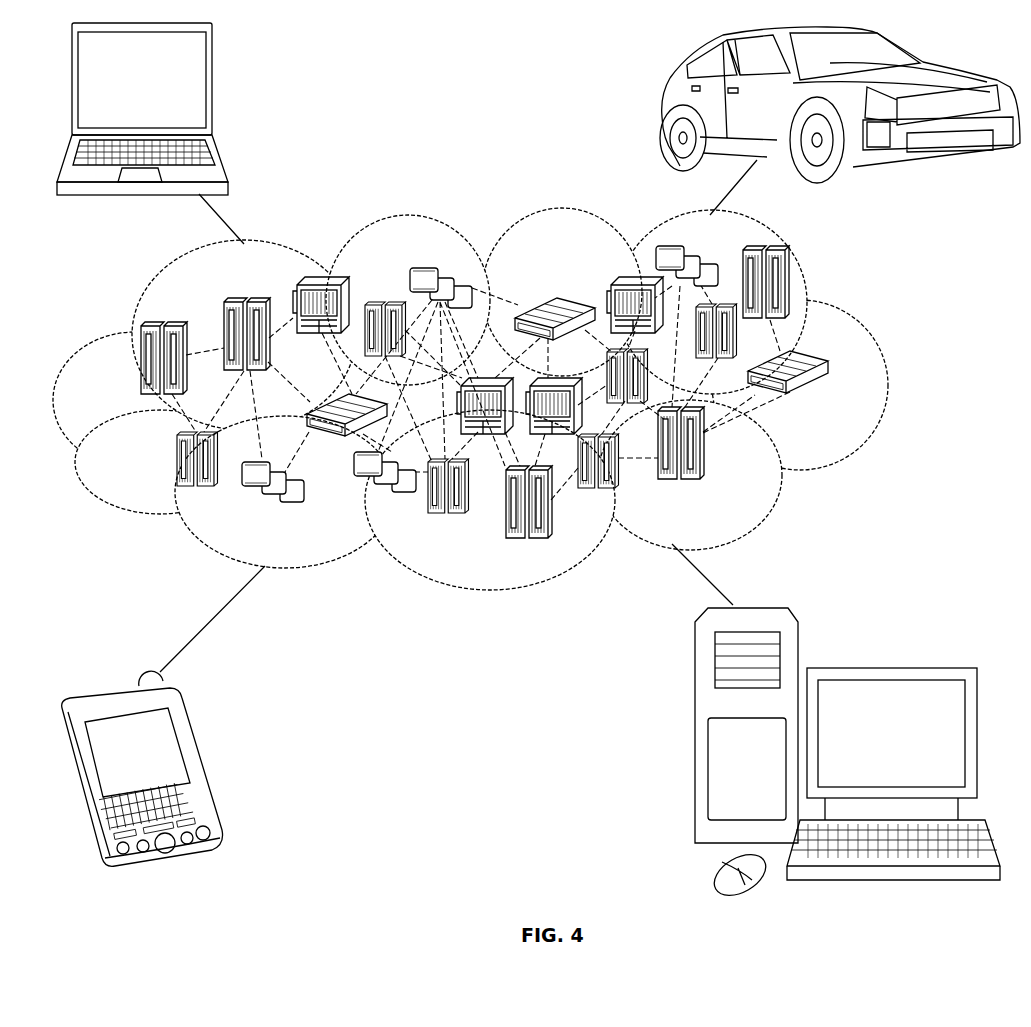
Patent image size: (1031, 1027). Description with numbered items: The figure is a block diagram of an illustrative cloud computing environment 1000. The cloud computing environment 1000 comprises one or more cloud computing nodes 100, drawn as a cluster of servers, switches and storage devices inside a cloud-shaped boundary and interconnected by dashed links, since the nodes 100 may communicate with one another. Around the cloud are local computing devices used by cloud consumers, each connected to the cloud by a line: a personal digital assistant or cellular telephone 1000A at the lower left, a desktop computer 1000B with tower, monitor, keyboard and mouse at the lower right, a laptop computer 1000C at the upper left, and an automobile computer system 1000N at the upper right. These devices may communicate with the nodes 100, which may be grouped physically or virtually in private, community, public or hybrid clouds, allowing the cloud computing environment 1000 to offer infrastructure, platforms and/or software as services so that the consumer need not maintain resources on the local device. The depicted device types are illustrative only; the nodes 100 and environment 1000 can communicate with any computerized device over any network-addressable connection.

The cloud computing environment 1000 is at (890, 372).
The cloud computing nodes 100 is at (832, 401).
The laptop computer 1000C is at (212, 90).
The automobile computer system 1000N is at (662, 106).
The personal digital assistant (PDA) or cellular telephone 1000A is at (206, 768).
The desktop computer 1000B is at (890, 664).